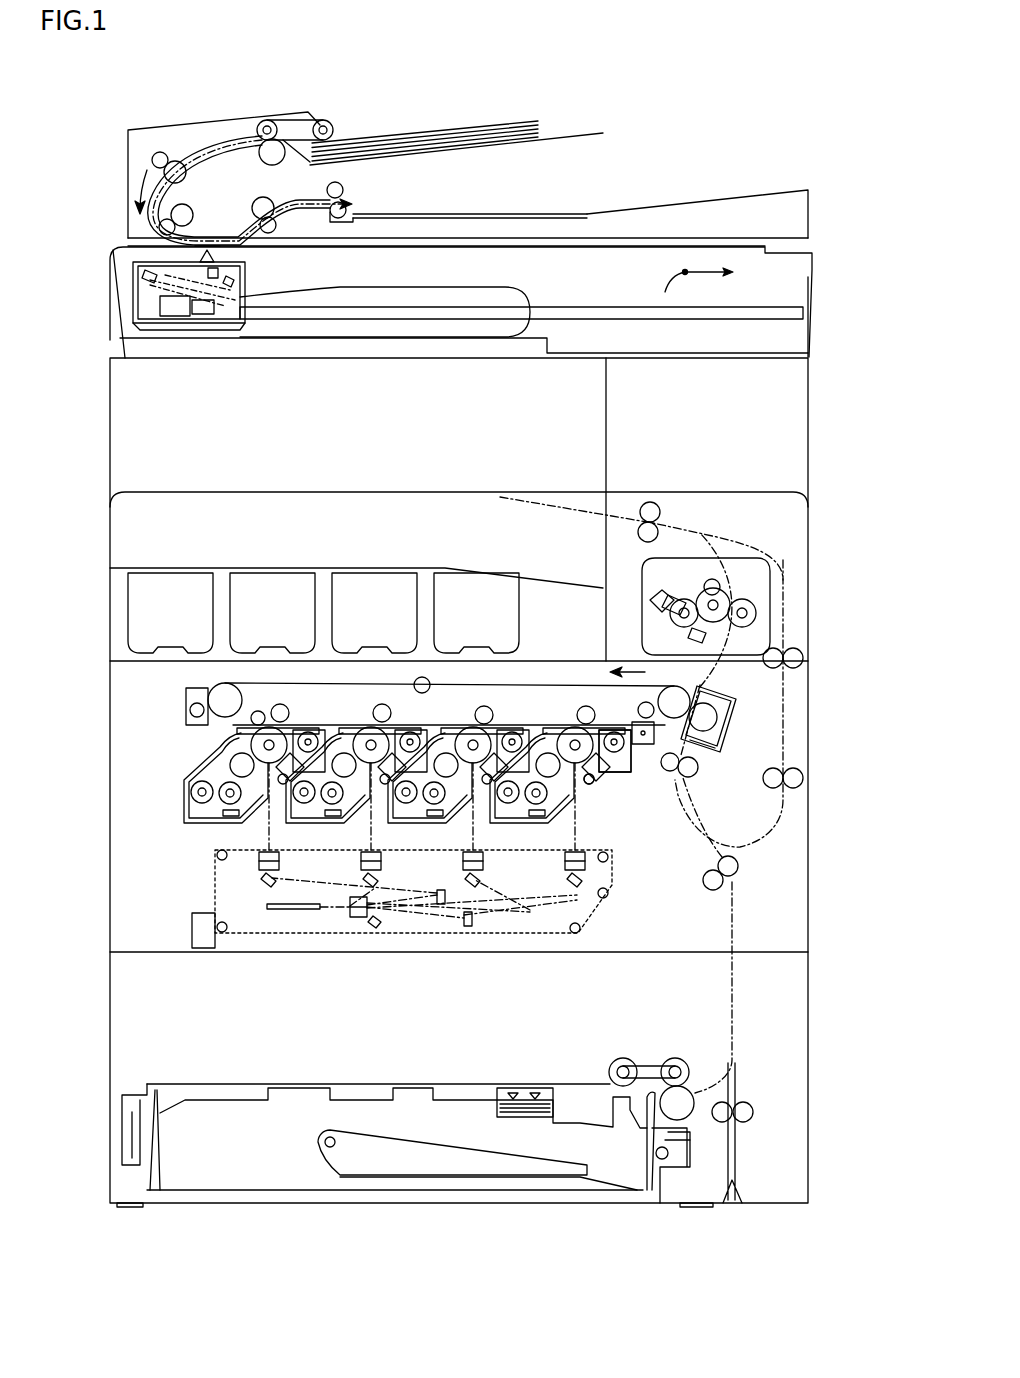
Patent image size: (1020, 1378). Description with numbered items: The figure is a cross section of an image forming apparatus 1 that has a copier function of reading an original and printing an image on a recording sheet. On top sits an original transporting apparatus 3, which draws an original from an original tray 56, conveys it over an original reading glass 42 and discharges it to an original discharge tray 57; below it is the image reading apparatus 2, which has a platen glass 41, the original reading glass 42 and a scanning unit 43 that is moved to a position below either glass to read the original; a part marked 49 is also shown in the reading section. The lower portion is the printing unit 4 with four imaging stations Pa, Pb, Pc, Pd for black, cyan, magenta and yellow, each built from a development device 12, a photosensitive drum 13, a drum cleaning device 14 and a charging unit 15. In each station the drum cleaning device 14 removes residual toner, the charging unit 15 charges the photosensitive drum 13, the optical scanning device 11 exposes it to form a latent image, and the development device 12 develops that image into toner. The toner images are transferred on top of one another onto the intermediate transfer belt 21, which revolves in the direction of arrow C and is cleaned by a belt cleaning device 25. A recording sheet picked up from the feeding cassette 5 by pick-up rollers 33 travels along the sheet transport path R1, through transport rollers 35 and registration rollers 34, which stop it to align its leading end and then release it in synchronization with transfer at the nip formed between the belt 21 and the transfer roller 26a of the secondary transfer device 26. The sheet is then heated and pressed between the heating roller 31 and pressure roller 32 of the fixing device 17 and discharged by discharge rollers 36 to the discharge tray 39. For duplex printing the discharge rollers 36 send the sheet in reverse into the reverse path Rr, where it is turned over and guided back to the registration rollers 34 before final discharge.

The image forming apparatus 1 is at (480, 46).
The image reading apparatus 2 is at (822, 327).
The original transporting apparatus 3 is at (812, 213).
The printing unit 4 is at (812, 821).
The feeding cassette 5 is at (122, 1125).
The optical scanning device 11 is at (612, 890).
The development device 12 is at (522, 838).
The photosensitive drum 13 is at (580, 725).
The drum cleaning device 14 is at (614, 748).
The charging unit 15 is at (596, 790).
The fixing device 17 is at (770, 585).
The intermediate transfer belt 21 is at (540, 690).
The belt cleaning device 25 is at (186, 708).
The secondary transfer device 26 is at (745, 745).
The transfer roller 26a is at (740, 725).
The heating roller 31 is at (715, 585).
The pressure roller 32 is at (745, 612).
The pick-up rollers 33 is at (622, 1056).
The registration rollers 34 is at (700, 775).
The transport rollers 35 is at (745, 867).
The discharge rollers 36 is at (650, 500).
The discharge tray 39 is at (245, 566).
The platen glass 41 is at (708, 238).
The original reading glass 42 is at (207, 262).
The scanning unit 43 is at (133, 282).
The cable 49 is at (520, 300).
The original tray 56 is at (580, 130).
The original discharge tray 57 is at (608, 212).
The imaging station Pa is at (558, 706).
The imaging station Pb is at (444, 706).
The imaging station Pc is at (345, 706).
The imaging station Pd is at (180, 808).
The direction of arrow C is at (640, 668).
The sheet transport path R1 is at (680, 820).
The reverse path Rr is at (812, 673).